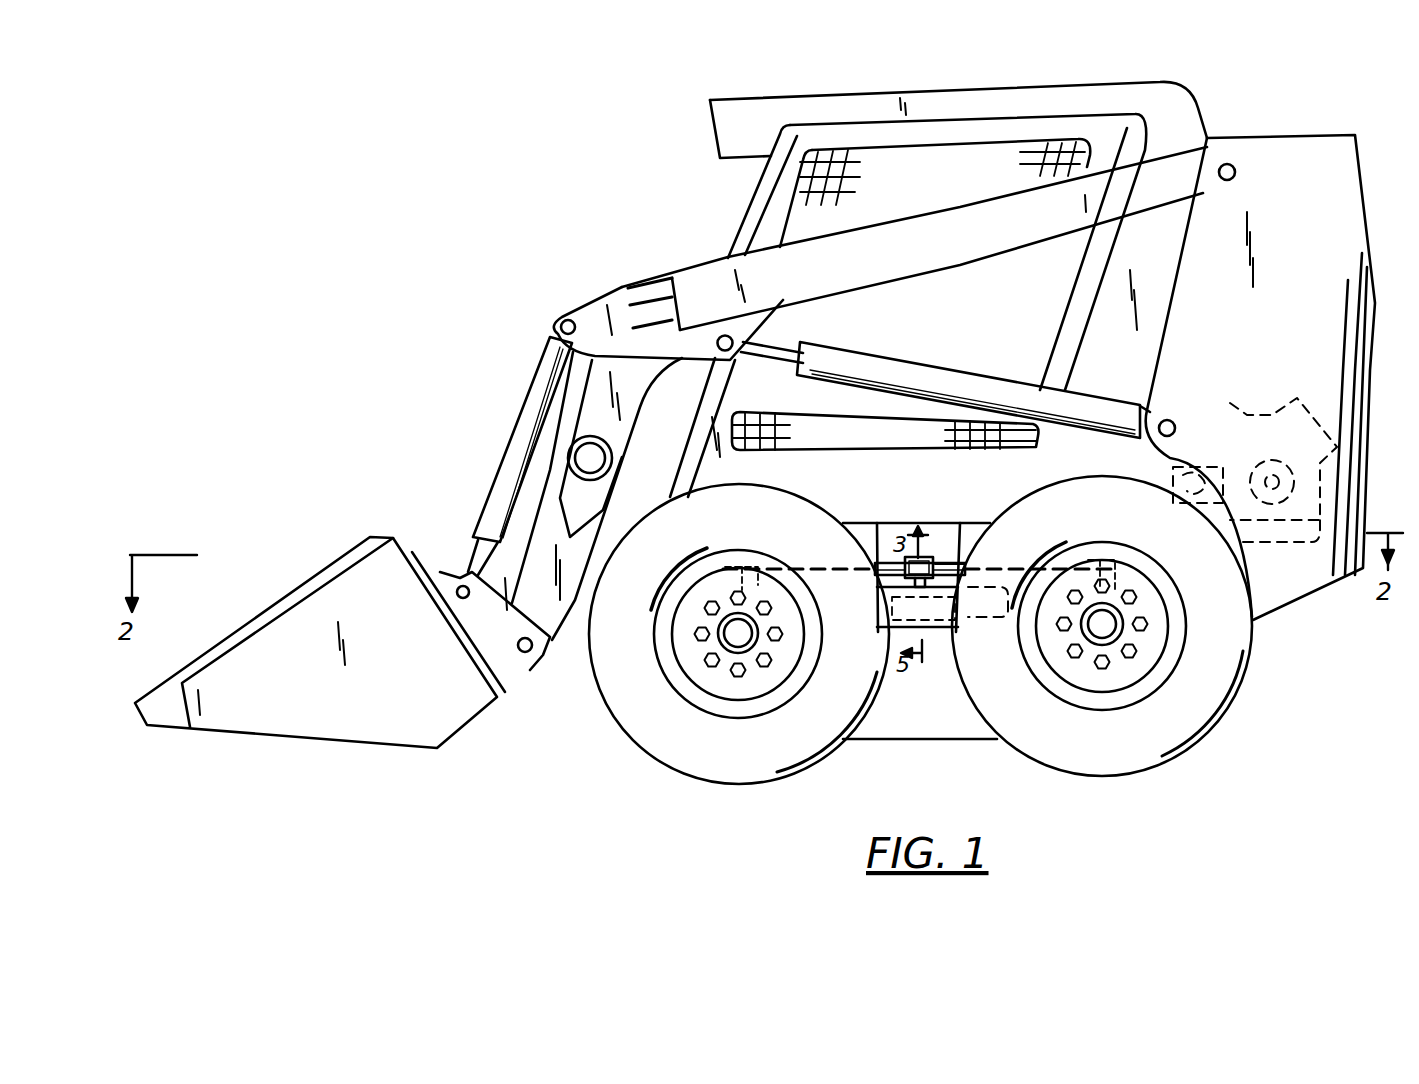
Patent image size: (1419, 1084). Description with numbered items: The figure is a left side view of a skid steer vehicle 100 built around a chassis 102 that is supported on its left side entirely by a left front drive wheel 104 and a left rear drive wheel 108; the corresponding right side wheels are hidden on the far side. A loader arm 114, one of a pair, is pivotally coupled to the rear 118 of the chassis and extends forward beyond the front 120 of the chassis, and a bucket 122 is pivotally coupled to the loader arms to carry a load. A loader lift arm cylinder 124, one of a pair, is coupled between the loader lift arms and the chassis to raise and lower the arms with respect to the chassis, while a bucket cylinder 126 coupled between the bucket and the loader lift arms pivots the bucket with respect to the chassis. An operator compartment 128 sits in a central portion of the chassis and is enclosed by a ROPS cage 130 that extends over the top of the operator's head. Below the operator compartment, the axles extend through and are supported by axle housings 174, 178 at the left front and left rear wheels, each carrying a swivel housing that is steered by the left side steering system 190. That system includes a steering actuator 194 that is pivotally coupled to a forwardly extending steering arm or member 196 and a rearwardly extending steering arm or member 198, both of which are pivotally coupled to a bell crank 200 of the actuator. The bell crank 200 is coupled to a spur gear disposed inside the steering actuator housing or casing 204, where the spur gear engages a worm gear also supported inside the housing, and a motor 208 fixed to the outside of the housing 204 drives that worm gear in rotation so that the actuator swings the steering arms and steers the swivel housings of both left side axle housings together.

The skid steer vehicle 100 is at (522, 204).
The chassis 102 is at (897, 730).
The left front drive wheel 104 is at (623, 735).
The left rear drive wheel 108 is at (1237, 695).
The loader arm 114 is at (600, 289).
The rear of the chassis 118 is at (1247, 132).
The front of the chassis 120 is at (625, 228).
The bucket 122 is at (345, 548).
The loader lift arm cylinder 124 is at (962, 327).
The bucket cylinder 126 is at (515, 407).
The operator compartment 128 is at (962, 188).
The ROPS cage 130 is at (740, 207).
The axle housing 174 is at (693, 657).
The axle housing 178 is at (1153, 603).
The left side steering system 190 is at (946, 550).
The steering actuator 194 is at (943, 636).
The forwardly extending steering arm 196 is at (882, 563).
The rearwardly extending steering arm 198 is at (955, 562).
The bell crank 200 is at (930, 557).
The steering actuator housing 204 is at (880, 635).
The motor 208 is at (985, 640).